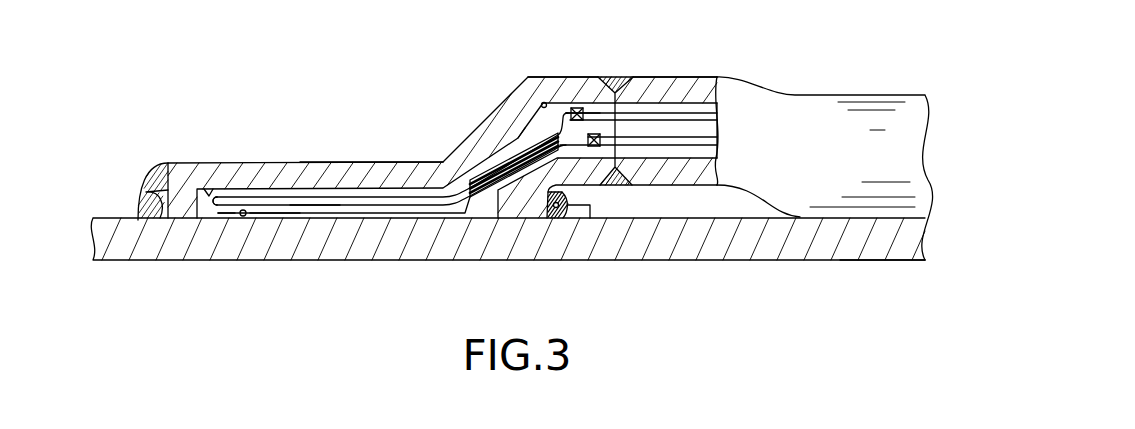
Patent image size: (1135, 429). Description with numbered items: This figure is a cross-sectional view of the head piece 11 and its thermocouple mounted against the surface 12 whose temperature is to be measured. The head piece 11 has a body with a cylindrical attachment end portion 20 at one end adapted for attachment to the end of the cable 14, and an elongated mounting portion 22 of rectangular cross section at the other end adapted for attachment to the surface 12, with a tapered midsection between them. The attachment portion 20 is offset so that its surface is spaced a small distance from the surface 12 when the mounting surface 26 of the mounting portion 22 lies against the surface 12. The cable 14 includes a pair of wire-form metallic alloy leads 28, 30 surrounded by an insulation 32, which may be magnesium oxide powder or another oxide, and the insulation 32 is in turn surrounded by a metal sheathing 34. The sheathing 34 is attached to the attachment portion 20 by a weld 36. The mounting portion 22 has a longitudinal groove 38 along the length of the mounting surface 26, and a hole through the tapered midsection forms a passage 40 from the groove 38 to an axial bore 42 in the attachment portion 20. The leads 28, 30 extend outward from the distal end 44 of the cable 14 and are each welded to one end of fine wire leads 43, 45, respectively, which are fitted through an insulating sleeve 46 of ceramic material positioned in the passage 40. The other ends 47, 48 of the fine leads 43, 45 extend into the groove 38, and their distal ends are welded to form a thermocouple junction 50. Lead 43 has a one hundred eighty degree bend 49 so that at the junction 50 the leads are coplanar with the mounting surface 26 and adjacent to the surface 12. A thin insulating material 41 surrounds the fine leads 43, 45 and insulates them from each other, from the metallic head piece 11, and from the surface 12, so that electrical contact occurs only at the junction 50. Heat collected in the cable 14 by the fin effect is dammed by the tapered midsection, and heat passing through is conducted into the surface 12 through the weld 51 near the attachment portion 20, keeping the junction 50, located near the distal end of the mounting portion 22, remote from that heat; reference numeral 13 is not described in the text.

The head piece 11 is at (364, 158).
The surface 12 is at (112, 218).
The base body 13 is at (880, 237).
The cable 14 is at (770, 81).
The cylindrical attachment end portion 20 is at (565, 77).
The elongated mounting portion 22 is at (242, 158).
The mounting surface 26 is at (512, 210).
The metallic alloy lead 28 is at (687, 112).
The metallic alloy lead 30 is at (680, 145).
The insulation 32 is at (712, 128).
The metal sheathing 34 is at (670, 77).
The weld 36 is at (617, 76).
The longitudinal groove 38 is at (208, 192).
The passage 40 is at (518, 135).
The insulating material 41 is at (341, 211).
The axial bore 42 is at (542, 103).
The fine wire lead 43 is at (322, 195).
The distal end 44 is at (587, 100).
The fine wire lead 45 is at (313, 208).
The insulating sleeve 46 is at (490, 172).
The other end of fine lead 47 is at (223, 213).
The other end of fine lead 48 is at (273, 213).
The 180 degree bend 49 is at (213, 200).
The thermocouple junction 50 is at (244, 217).
The weld 51 is at (147, 183).